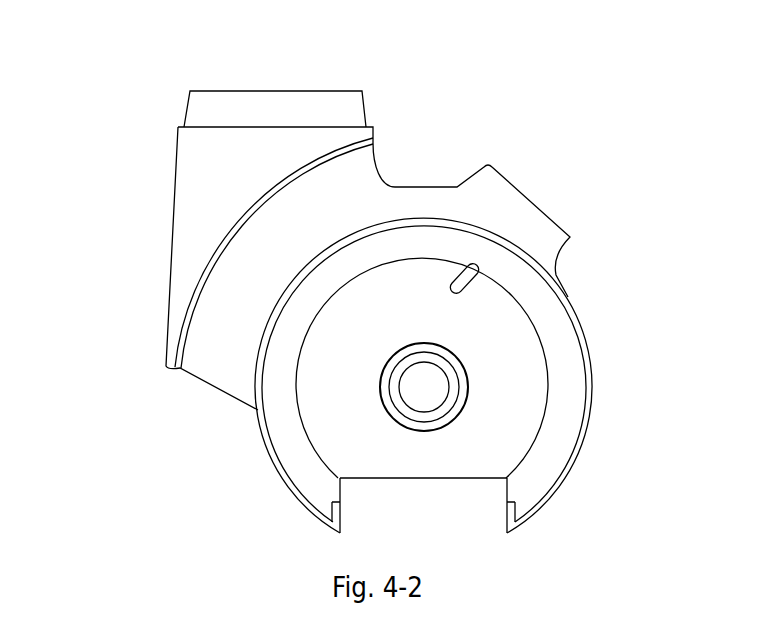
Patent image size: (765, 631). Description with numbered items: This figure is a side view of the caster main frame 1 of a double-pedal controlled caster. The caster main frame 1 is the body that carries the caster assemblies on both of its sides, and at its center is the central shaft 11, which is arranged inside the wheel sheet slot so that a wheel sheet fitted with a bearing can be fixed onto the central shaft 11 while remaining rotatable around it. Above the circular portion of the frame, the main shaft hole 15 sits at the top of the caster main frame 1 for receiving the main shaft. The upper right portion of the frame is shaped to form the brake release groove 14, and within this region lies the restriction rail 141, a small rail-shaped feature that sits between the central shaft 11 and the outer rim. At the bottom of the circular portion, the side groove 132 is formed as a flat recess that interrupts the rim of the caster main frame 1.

The caster main frame 1 is at (126, 210).
The main shaft hole 15 is at (297, 108).
The brake release groove 14 is at (525, 205).
The restriction rail 141 is at (465, 280).
The central shaft 11 is at (432, 388).
The side groove 132 is at (440, 493).